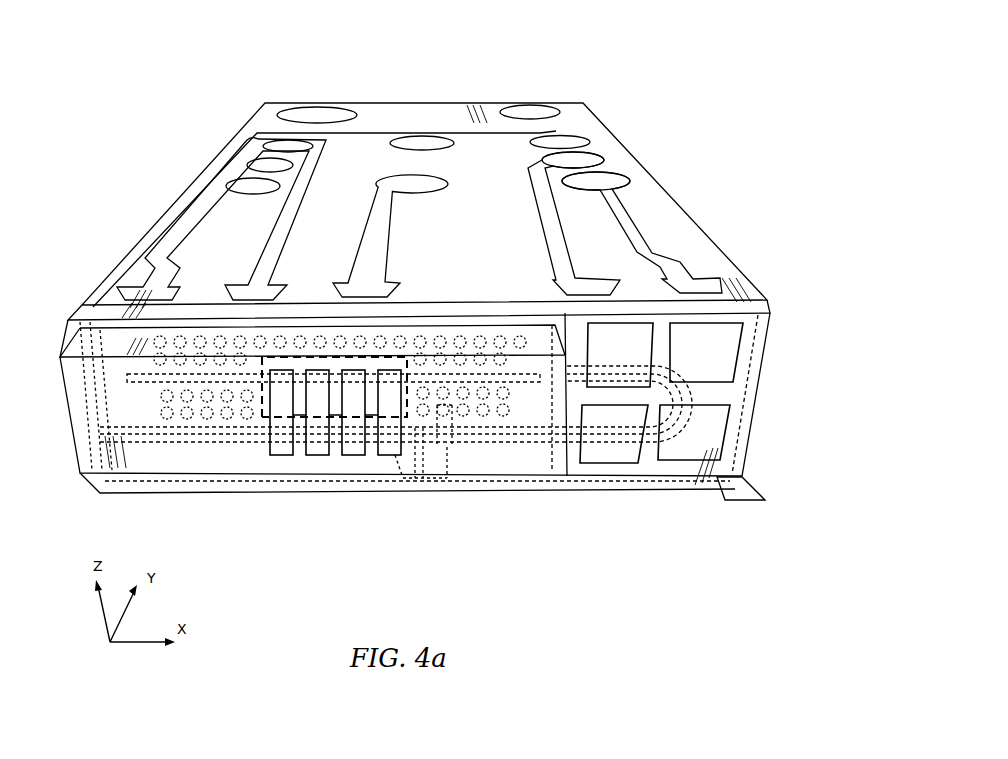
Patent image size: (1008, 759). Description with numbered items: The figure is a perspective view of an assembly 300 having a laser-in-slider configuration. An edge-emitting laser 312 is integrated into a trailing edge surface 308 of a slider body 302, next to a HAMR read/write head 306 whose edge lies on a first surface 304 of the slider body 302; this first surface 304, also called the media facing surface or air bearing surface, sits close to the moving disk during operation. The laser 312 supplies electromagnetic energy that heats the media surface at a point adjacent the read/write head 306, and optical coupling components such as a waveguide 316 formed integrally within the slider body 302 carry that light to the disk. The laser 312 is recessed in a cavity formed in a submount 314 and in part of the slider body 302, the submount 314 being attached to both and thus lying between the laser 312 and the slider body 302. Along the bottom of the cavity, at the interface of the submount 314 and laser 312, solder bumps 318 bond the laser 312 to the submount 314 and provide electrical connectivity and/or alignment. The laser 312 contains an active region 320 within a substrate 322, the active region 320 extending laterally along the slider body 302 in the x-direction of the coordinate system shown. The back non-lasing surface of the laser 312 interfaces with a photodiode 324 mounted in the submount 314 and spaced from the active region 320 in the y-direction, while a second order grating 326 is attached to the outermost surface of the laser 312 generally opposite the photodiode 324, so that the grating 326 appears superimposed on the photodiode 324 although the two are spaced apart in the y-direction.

The assembly 300 is at (583, 50).
The slider body 302 is at (642, 202).
The first surface 304 is at (755, 503).
The HAMR read/write head 306 is at (428, 475).
The trailing edge surface 308 is at (760, 300).
The edge-emitting laser 312 is at (69, 478).
The submount 314 is at (736, 401).
The waveguide 316 is at (622, 445).
The solder bumps 318 is at (169, 418).
The active region 320 is at (74, 441).
The substrate 322 is at (88, 378).
The photodiode 324 is at (247, 440).
The grating 326 is at (323, 470).